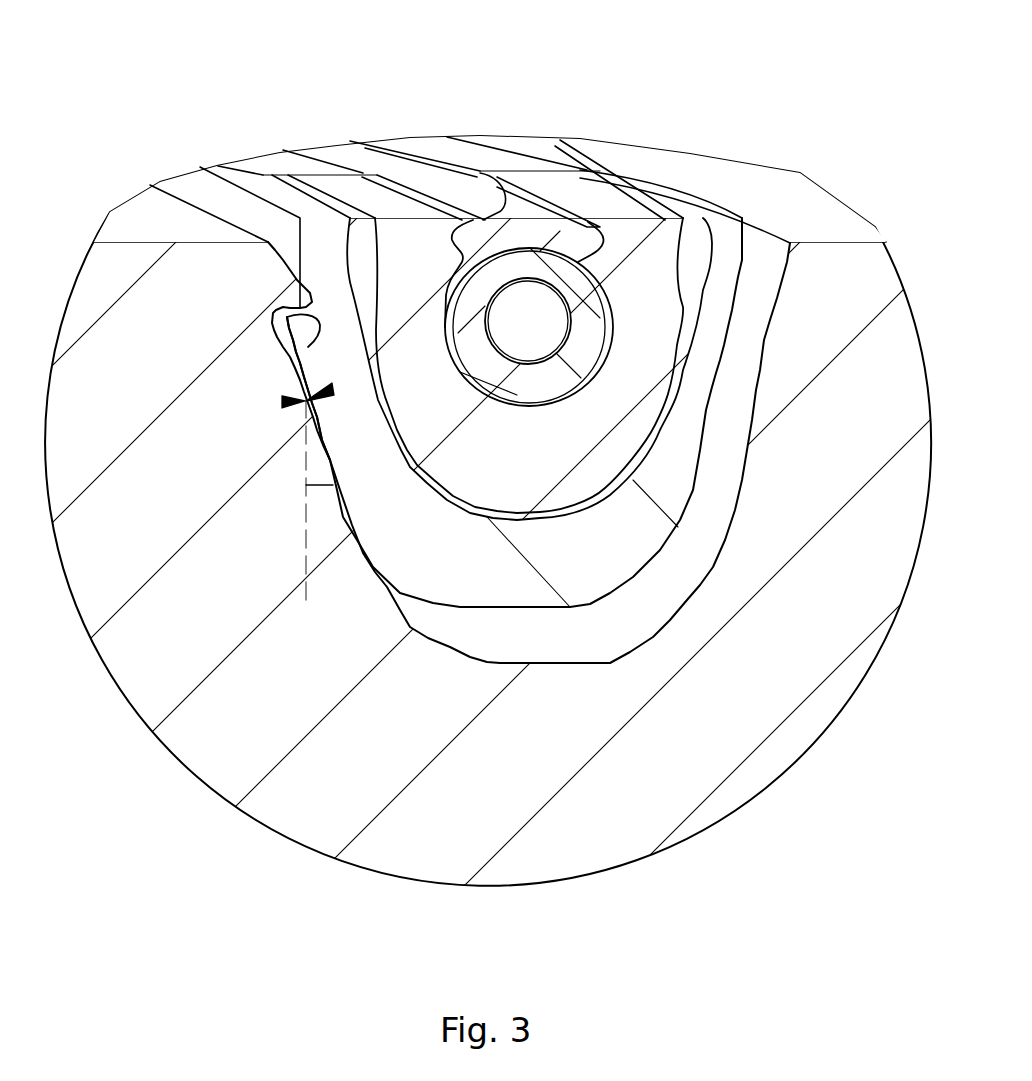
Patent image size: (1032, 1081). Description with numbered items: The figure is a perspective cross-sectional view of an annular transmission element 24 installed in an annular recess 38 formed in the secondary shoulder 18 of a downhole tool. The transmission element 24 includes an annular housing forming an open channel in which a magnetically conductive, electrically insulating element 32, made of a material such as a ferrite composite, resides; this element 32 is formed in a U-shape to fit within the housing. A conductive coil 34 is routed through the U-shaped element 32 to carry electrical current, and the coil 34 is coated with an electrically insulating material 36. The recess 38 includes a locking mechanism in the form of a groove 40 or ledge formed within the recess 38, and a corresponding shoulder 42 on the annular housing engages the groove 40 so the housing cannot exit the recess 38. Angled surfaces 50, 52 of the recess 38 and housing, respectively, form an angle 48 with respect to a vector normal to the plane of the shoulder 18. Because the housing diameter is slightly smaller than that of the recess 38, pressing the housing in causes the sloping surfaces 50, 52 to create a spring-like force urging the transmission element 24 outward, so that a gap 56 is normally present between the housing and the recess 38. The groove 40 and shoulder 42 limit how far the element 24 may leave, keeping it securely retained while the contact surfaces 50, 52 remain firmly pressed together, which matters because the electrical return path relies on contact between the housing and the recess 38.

The secondary shoulder 18 is at (806, 212).
The transmission element 24 is at (312, 88).
The magnetically conductive, electrically insulating element 32 is at (490, 221).
The conductive coil 34 is at (552, 333).
The electrically insulating material 36 is at (583, 331).
The annular recess 38 is at (510, 663).
The groove 40 is at (277, 333).
The shoulder 42 is at (312, 338).
The angle 48 is at (320, 487).
The angled surface of the recess 50 is at (290, 400).
The angled surface of the housing 52 is at (314, 397).
The gap 56 is at (508, 635).